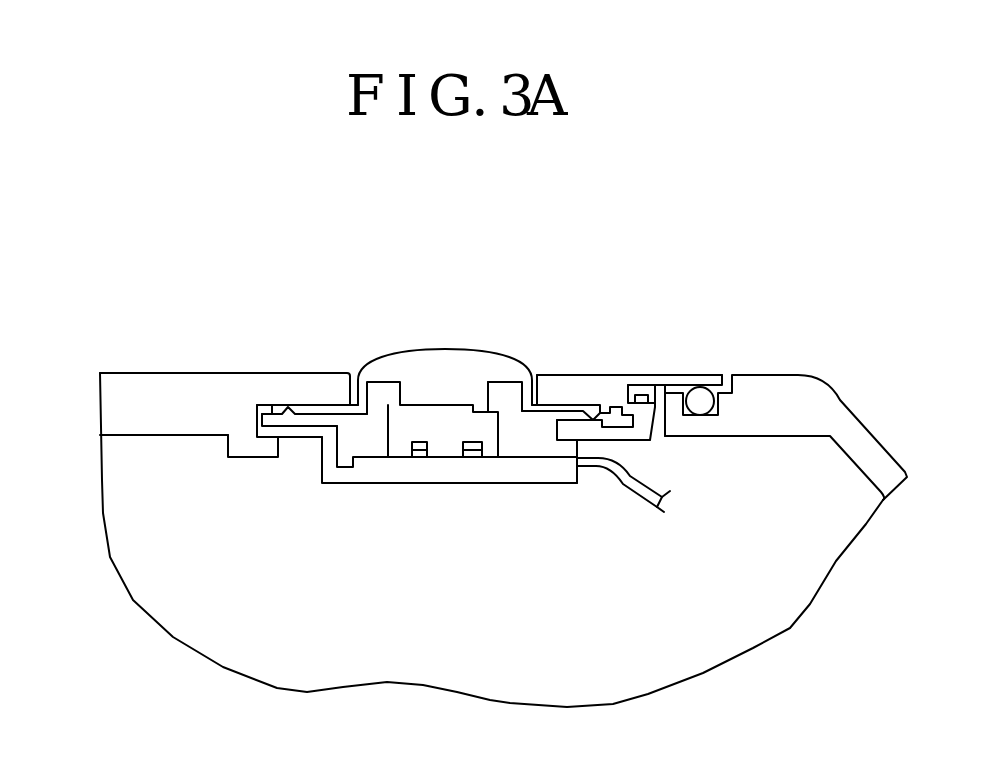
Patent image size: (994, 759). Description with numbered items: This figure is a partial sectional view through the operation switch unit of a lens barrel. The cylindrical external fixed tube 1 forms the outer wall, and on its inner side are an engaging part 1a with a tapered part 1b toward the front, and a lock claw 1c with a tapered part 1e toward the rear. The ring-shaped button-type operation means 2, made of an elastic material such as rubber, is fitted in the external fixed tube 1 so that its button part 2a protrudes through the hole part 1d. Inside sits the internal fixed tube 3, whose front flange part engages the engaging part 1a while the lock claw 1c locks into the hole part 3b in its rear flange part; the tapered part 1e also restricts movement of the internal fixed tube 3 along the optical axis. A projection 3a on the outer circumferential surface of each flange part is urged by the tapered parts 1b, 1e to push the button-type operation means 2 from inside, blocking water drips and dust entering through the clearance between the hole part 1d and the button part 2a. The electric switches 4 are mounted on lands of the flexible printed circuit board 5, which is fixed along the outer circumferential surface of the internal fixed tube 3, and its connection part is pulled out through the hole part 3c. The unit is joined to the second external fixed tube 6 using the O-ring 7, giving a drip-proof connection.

The external fixed tube 1 is at (593, 388).
The engaging part 1a is at (250, 450).
The tapered part 1b is at (266, 440).
The lock claw 1c is at (666, 395).
The hole part 1d is at (545, 392).
The tapered part 1e is at (642, 398).
The button-type operation means 2 is at (328, 408).
The button part 2a is at (478, 363).
The internal fixed tube 3 is at (463, 483).
The projection 3a is at (288, 412).
The hole part 3b is at (655, 440).
The hole part 3c is at (570, 447).
The electric switch 4 is at (420, 425).
The flexible printed circuit board 5 is at (637, 500).
The second external fixed tube 6 is at (822, 418).
The O-ring 7 is at (704, 394).